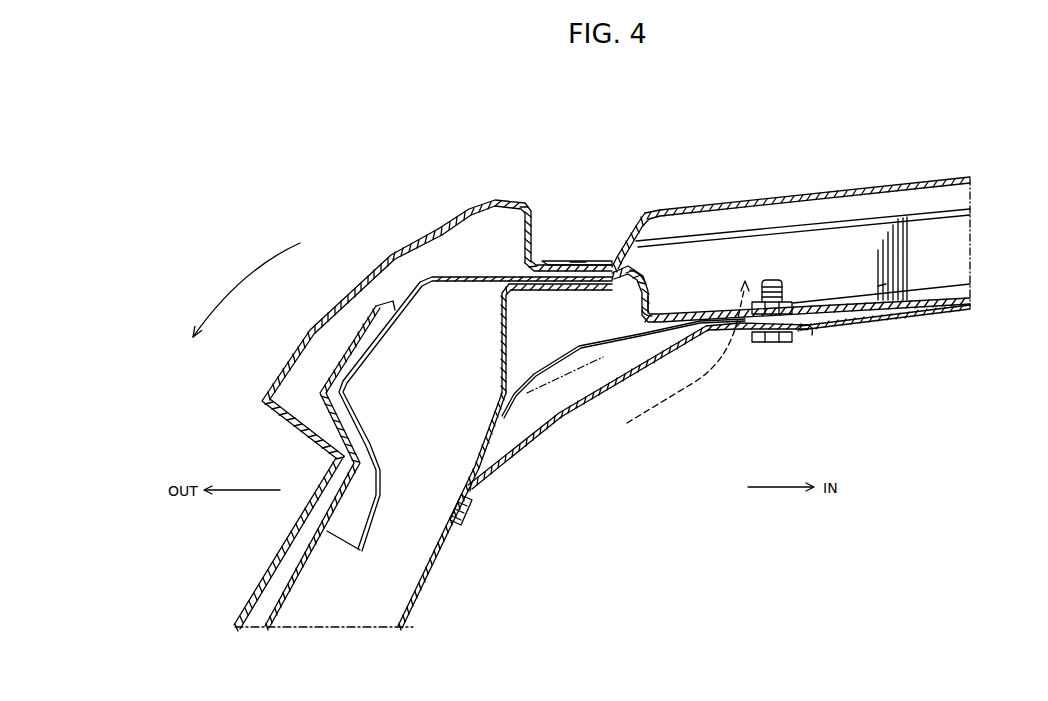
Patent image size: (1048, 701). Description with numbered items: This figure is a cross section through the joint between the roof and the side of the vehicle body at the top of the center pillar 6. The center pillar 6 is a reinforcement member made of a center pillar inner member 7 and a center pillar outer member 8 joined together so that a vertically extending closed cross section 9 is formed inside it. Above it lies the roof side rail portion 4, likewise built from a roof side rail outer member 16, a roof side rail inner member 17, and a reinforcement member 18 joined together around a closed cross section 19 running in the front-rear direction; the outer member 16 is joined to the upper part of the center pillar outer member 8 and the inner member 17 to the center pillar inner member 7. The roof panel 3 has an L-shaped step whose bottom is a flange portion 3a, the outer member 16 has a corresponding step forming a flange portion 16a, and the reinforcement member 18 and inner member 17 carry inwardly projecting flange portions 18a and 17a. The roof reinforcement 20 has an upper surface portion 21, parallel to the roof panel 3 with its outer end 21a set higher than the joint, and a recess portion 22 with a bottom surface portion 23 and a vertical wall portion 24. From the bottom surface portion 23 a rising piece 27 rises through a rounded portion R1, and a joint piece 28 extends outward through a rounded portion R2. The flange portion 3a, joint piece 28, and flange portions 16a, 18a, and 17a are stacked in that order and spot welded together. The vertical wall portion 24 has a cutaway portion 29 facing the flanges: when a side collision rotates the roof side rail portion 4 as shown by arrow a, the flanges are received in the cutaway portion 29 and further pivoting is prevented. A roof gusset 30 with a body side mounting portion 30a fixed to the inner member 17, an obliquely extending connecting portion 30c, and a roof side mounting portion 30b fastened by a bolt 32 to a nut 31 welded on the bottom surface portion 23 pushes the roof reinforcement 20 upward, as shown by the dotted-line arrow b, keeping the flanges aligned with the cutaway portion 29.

The roof panel 3 is at (849, 188).
The flange portion 3a is at (598, 262).
The roof side rail portion 4 is at (393, 257).
The center pillar 6 is at (295, 576).
The center pillar inner member 7 is at (413, 608).
The center pillar outer member 8 is at (288, 608).
The closed cross section 9 is at (362, 611).
The roof side rail outer member 16 is at (312, 332).
The flange portion 16a is at (567, 265).
The roof side rail inner member 17 is at (501, 333).
The flange portion 17a is at (592, 292).
The reinforcement member 18 is at (468, 276).
The flange portion 18a is at (542, 284).
The closed cross section 19 is at (438, 383).
The roof reinforcement 20 is at (932, 210).
The upper surface portion 21 is at (773, 240).
The outer end 21a is at (635, 218).
The recess portion 22 is at (976, 233).
The bottom surface portion 23 is at (873, 318).
The vertical wall portion 24 is at (846, 275).
The rising piece 27 is at (653, 309).
The joint piece 28 is at (578, 262).
The cutaway portion 29 is at (652, 286).
The roof gusset 30 is at (549, 437).
The body side mounting portion 30a is at (477, 505).
The roof side mounting portion 30b is at (808, 337).
The connecting portion 30c is at (570, 410).
The nut 31 is at (882, 285).
The bolt 32 is at (777, 343).
The rounded portion R1 is at (636, 314).
The rounded portion R2 is at (648, 270).
The arrow a is at (223, 290).
The dotted-line arrow b is at (690, 386).